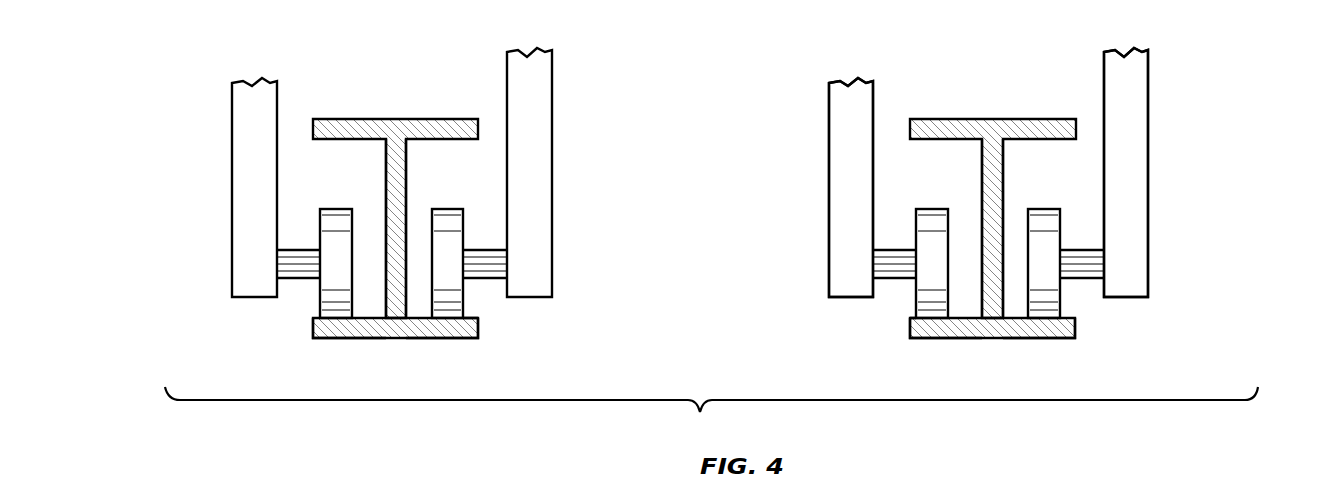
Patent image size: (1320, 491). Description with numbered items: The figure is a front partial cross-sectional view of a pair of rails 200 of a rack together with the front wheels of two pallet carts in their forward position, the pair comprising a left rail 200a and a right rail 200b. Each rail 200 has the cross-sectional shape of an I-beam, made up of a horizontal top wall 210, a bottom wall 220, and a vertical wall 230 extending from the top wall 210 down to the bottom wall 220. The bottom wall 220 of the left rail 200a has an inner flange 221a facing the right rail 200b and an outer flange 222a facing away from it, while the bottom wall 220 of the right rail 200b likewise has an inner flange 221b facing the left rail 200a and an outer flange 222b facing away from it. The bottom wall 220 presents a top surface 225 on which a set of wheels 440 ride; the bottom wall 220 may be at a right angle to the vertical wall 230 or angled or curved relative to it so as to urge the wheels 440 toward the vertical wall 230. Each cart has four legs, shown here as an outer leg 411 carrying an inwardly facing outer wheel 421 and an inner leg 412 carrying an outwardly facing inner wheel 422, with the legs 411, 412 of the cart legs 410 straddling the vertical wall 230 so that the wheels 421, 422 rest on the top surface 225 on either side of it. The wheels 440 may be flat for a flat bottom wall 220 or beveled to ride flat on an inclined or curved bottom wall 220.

The rail 200 is at (711, 412).
The left rail 200a is at (432, 119).
The right rail 200b is at (950, 119).
The top wall 210 is at (358, 119).
The bottom wall 220 is at (313, 325).
The inner flange 221a is at (446, 338).
The outer flange 222a is at (330, 338).
The inner flange 221b is at (940, 338).
The outer flange 222b is at (1045, 338).
The top surface 225 is at (470, 316).
The vertical wall 230 is at (406, 176).
The clamping member 410 is at (1128, 85).
The outer leg 411 is at (232, 128).
The inner leg 412 is at (552, 103).
The outer wheel 421 is at (335, 298).
The inner wheel 422 is at (445, 300).
The wheels 440 is at (330, 283).